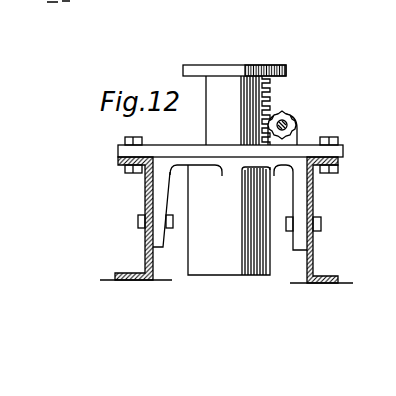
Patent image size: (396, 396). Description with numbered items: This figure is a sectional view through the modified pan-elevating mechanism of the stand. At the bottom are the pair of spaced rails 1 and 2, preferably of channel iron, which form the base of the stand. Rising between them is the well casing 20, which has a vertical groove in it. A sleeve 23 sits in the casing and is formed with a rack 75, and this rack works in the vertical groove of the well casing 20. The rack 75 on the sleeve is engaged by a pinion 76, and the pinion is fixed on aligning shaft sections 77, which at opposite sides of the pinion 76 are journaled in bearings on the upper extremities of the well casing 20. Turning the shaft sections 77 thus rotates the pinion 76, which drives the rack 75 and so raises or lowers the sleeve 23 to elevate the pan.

The rail 1 is at (145, 250).
The rail 2 is at (313, 258).
The well casing 20 is at (221, 268).
The sleeve 23 is at (222, 85).
The rack 75 is at (268, 93).
The pinion 76 is at (291, 116).
The shaft section 77 is at (296, 125).